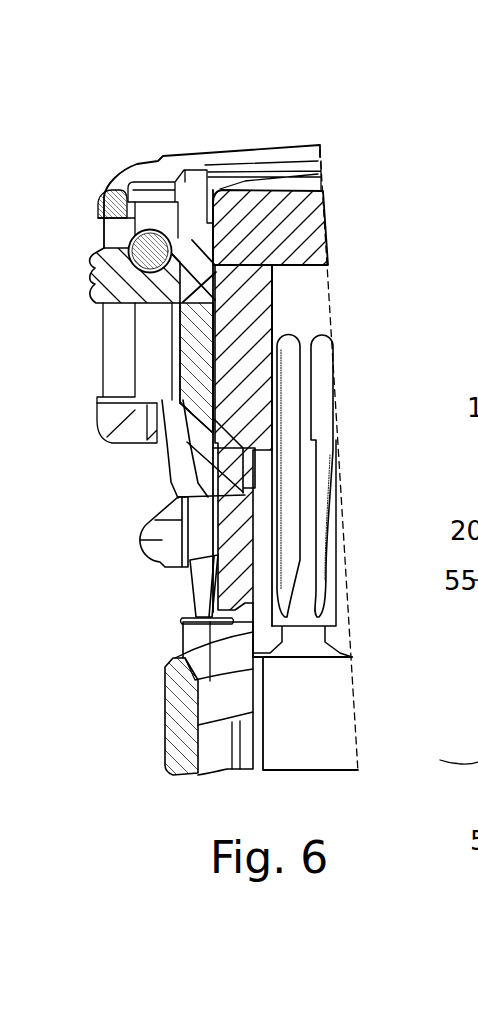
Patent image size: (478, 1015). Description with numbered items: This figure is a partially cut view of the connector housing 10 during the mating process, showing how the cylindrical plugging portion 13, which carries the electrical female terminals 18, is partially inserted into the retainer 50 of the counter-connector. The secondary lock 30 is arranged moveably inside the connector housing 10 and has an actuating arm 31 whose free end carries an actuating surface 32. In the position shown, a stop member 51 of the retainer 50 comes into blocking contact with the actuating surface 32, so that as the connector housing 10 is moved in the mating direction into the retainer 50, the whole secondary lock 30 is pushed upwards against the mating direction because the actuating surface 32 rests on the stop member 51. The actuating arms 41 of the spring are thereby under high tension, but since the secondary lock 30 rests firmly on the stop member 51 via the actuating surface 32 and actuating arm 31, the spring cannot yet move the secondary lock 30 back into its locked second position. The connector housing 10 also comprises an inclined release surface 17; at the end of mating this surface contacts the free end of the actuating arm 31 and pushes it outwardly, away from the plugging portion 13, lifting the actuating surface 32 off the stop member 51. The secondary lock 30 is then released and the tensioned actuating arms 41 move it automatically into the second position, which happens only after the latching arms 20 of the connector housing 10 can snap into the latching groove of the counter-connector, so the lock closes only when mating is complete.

The connector housing 10 is at (181, 118).
The actuating arm 41 is at (153, 255).
The secondary lock 30 is at (107, 270).
The actuating arm 31 is at (182, 318).
The inclined release surface 17 is at (208, 432).
The actuating surface 32 is at (205, 478).
The latching arm 20 is at (147, 538).
The stop member 51 is at (218, 560).
The plugging portion 13 is at (197, 679).
The electrical female terminals 18 is at (318, 380).
The retainer 50 is at (320, 725).